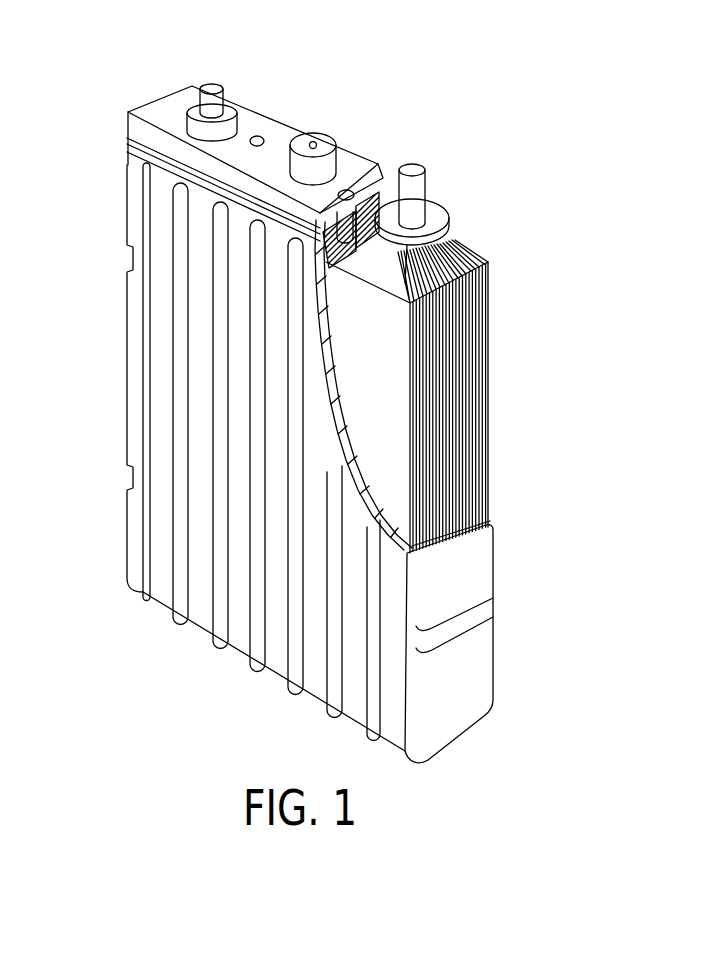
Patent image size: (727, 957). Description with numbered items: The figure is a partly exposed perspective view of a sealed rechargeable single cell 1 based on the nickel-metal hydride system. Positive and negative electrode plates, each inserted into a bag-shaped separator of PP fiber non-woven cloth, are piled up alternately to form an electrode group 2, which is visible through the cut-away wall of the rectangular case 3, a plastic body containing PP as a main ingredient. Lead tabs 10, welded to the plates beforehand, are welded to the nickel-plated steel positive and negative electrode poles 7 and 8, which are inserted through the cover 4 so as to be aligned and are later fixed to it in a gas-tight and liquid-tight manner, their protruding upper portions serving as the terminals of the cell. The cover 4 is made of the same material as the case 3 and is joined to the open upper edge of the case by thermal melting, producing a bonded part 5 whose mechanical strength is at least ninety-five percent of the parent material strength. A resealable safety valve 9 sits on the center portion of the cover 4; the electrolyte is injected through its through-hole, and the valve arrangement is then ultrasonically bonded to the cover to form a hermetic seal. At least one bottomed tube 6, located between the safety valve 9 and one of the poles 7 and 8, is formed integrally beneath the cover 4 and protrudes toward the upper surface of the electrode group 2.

The single cell 1 is at (533, 310).
The electrode group 2 is at (470, 402).
The case 3 is at (477, 672).
The cover 4 is at (285, 130).
The bonded part 5 is at (147, 158).
The tube 6 is at (257, 148).
The positive electrode pole 7 is at (215, 84).
The negative electrode pole 8 is at (416, 168).
The safety valve 9 is at (330, 133).
The lead tabs 10 is at (466, 249).